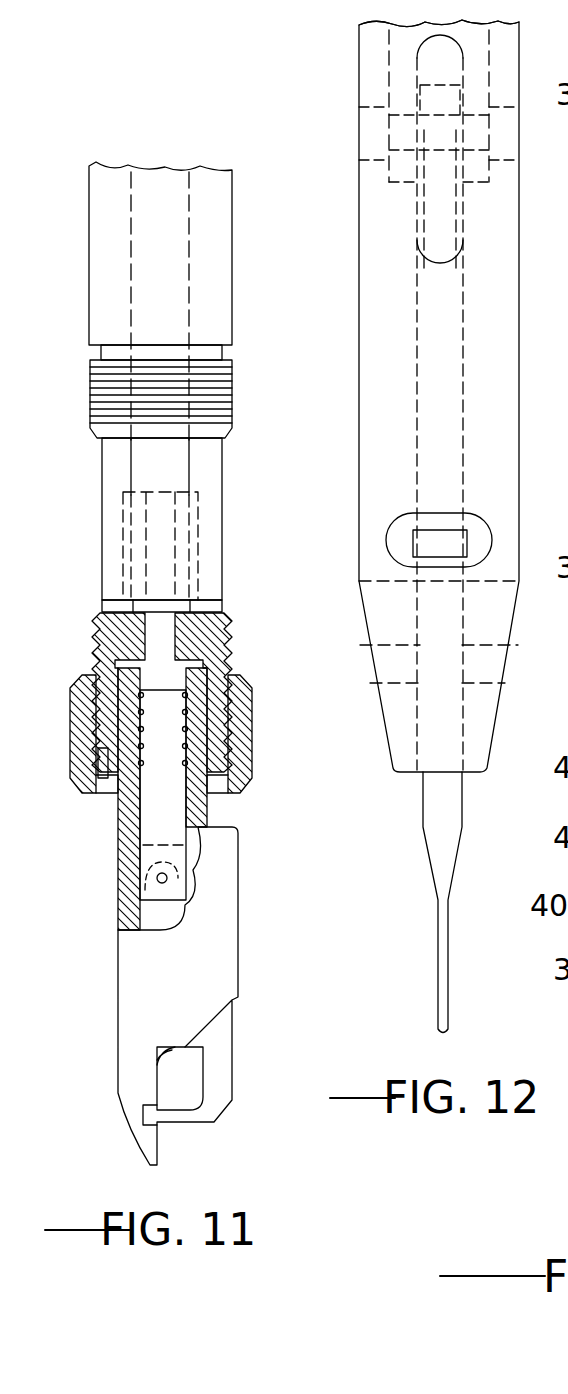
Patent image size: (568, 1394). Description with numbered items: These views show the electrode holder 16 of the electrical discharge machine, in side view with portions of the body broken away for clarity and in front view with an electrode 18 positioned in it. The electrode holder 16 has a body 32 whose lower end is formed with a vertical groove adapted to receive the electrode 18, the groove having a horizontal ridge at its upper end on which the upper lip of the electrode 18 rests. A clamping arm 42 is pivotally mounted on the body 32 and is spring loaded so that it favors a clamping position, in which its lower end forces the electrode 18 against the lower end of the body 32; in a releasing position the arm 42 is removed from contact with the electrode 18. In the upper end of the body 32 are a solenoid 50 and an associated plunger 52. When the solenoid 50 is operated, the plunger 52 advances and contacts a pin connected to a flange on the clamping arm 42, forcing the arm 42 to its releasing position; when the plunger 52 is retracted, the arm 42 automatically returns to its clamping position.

In FIG. 11, the electrode holder 16 is at (152, 164).
In FIG. 12, the electrode holder 16 is at (360, 47).
In FIG. 12, the electrode 18 is at (433, 886).
In FIG. 11, the body 32 is at (225, 920).
In FIG. 12, the body 32 is at (375, 405).
In FIG. 11, the clamping arm 42 is at (215, 1047).
In FIG. 11, the solenoid 50 is at (205, 770).
In FIG. 11, the plunger 52 is at (152, 797).